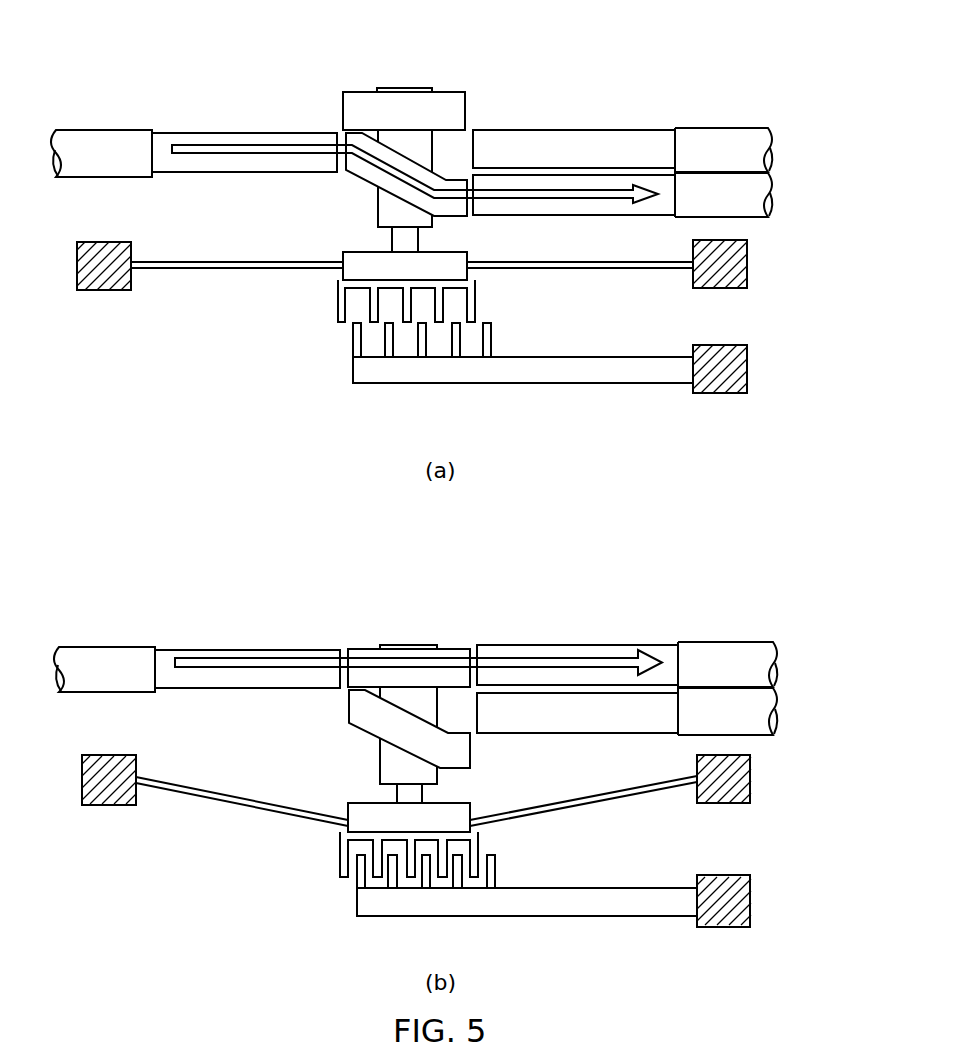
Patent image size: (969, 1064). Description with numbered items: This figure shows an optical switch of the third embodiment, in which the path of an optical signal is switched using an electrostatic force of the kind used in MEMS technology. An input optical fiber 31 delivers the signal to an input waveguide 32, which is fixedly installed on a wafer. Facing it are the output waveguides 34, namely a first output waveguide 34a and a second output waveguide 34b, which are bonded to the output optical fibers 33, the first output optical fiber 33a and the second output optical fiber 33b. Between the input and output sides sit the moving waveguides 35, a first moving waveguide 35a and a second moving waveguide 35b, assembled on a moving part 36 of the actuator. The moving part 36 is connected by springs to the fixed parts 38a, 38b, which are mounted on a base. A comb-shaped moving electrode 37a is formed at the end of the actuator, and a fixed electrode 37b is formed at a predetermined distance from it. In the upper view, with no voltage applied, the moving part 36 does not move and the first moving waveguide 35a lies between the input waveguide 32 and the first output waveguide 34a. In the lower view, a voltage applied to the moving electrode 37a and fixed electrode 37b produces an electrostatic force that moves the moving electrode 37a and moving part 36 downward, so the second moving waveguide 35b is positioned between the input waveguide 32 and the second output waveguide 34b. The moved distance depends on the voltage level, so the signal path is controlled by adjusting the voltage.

The input optical fiber 31 is at (112, 138).
The input waveguide 32 is at (218, 133).
The output optical fibers 33 is at (782, 431).
The first output optical fiber 33a is at (765, 193).
The second output optical fiber 33b is at (765, 145).
The output waveguides 34 is at (575, 415).
The first output waveguide 34a is at (615, 205).
The second output waveguide 34b is at (590, 130).
The moving waveguides 35 is at (385, 359).
The first moving waveguide 35a is at (458, 208).
The second moving waveguide 35b is at (343, 112).
The moving part 36 is at (383, 208).
The moving electrode 37a is at (347, 273).
The fixed electrode 37b is at (362, 383).
The fixed part 38a is at (105, 290).
The fixed part 38b is at (717, 393).